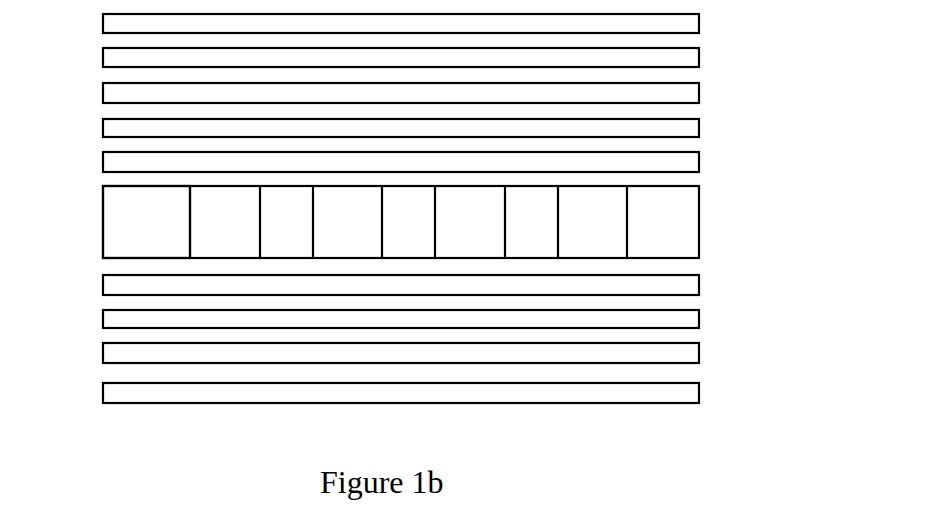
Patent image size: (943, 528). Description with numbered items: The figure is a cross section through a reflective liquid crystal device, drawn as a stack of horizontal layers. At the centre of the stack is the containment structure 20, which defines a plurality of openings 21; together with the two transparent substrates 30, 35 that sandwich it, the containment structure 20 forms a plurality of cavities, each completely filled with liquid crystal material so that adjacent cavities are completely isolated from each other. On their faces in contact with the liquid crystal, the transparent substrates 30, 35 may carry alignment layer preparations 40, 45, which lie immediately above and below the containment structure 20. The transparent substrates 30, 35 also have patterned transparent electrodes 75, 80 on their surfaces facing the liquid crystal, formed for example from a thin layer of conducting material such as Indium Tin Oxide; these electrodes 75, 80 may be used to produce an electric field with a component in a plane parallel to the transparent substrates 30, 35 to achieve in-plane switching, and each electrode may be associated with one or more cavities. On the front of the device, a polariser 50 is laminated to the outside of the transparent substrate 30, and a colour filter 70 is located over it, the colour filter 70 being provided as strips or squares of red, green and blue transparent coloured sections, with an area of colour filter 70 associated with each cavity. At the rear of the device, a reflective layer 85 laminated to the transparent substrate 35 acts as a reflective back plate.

The colour filter 70 is at (701, 24).
The polariser 50 is at (102, 58).
The patterned transparent electrode 75 is at (701, 93).
The transparent substrate 30 is at (102, 127).
The alignment layer preparation 40 is at (701, 162).
The containment structure 20 is at (701, 225).
The opening 21 is at (189, 223).
The alignment layer preparation 45 is at (102, 282).
The transparent substrate 35 is at (701, 322).
The patterned transparent electrode 80 is at (102, 354).
The reflective layer 85 is at (102, 393).